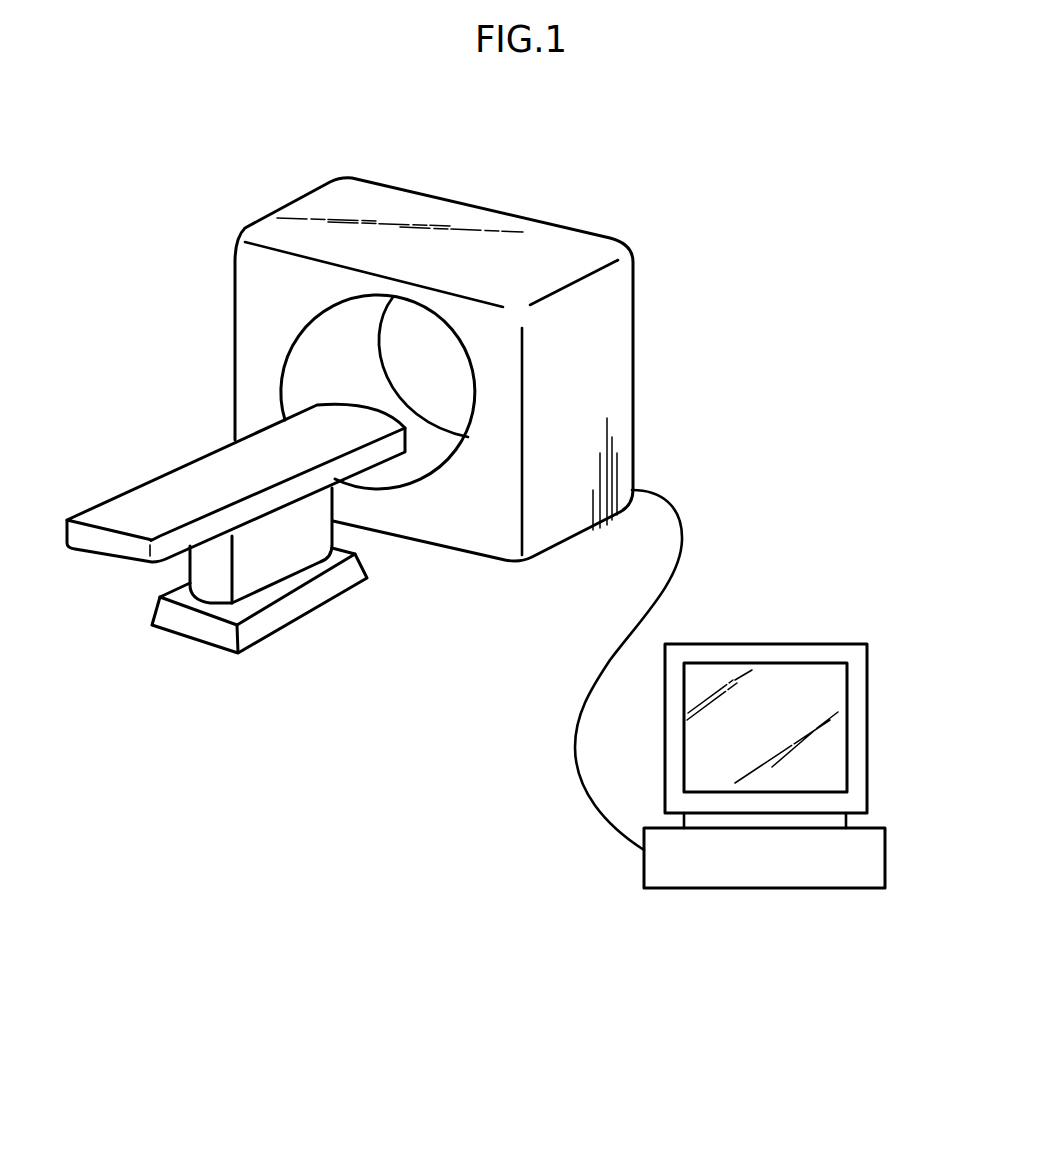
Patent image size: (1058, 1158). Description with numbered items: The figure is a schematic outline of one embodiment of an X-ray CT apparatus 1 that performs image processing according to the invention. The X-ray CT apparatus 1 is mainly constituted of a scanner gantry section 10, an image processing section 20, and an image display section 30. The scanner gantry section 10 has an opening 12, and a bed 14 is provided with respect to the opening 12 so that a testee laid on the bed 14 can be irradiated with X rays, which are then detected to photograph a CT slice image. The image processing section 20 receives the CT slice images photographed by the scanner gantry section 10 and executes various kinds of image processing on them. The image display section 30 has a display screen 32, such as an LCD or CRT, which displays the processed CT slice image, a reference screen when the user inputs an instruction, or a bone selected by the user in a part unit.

The X-ray CT apparatus 1 is at (778, 212).
The scanner gantry section 10 is at (542, 242).
The opening 12 is at (337, 347).
The bed 14 is at (140, 503).
The image processing section 20 is at (762, 878).
The image display section 30 is at (792, 643).
The display screen 32 is at (815, 745).